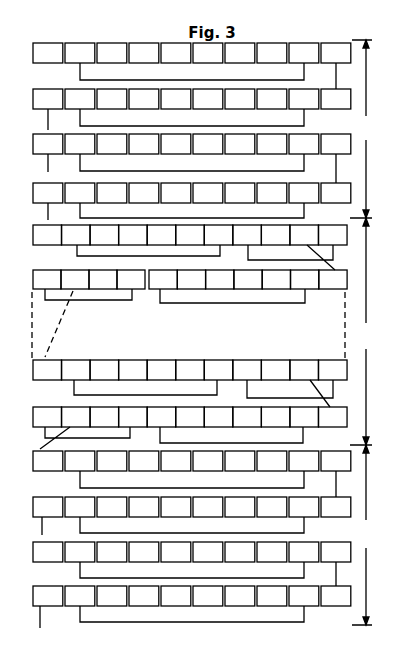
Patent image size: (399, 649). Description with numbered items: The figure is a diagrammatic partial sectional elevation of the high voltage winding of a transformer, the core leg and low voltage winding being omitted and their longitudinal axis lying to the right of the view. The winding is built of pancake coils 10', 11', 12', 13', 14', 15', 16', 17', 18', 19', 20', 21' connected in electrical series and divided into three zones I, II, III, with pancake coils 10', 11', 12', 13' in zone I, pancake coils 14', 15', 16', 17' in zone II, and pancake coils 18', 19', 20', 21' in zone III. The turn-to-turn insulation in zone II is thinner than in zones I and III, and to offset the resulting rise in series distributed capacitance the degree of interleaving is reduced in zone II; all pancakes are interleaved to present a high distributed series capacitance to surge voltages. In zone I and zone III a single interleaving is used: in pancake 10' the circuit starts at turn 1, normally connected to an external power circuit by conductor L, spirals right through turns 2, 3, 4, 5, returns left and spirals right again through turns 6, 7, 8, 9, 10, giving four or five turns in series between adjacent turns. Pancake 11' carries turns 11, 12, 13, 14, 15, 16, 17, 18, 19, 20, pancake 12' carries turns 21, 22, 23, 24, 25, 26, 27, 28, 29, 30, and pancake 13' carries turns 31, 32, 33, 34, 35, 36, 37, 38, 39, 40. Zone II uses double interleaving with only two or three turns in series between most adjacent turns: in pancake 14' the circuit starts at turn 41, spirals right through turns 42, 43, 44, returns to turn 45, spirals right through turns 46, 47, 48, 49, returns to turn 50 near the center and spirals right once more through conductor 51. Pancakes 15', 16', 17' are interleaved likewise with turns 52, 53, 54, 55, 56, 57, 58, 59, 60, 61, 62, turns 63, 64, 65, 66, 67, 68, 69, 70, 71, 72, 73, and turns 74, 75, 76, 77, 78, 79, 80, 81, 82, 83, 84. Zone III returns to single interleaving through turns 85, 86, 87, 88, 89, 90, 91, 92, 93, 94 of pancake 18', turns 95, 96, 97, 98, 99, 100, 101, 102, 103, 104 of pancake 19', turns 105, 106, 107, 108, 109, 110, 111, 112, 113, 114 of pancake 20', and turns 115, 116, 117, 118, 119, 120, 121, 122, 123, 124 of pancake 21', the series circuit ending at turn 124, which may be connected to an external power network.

The conductor L is at (49, 17).
The zone I is at (361, 129).
The zone II is at (361, 331).
The zone III is at (362, 535).
The pancake coil 10' is at (187, 66).
The pancake coil 11' is at (187, 110).
The pancake coil 12' is at (187, 158).
The pancake coil 13' is at (187, 203).
The pancake coil 14' is at (185, 247).
The pancake coil 15' is at (189, 314).
The pancake coil 16' is at (185, 383).
The pancake coil 17' is at (185, 428).
The pancake coil 18' is at (187, 474).
The pancake coil 19' is at (186, 517).
The pancake coil 20' is at (186, 564).
The pancake coil 21' is at (182, 610).
The turn 1 is at (48, 53).
The turn 2 is at (112, 53).
The turn 3 is at (176, 53).
The turn 4 is at (240, 53).
The turn 5 is at (304, 53).
The turn 6 is at (80, 53).
The turn 7 is at (144, 53).
The turn 8 is at (208, 53).
The turn 9 is at (272, 53).
The turn 10 is at (336, 53).
The turn 11 is at (336, 99).
The turn 12 is at (272, 99).
The turn 13 is at (208, 99).
The turn 14 is at (144, 99).
The turn 15 is at (80, 99).
The turn 16 is at (304, 99).
The turn 17 is at (240, 99).
The turn 18 is at (176, 99).
The turn 19 is at (112, 99).
The turn 20 is at (48, 99).
The turn 21 is at (48, 144).
The turn 22 is at (112, 144).
The turn 23 is at (176, 144).
The turn 24 is at (240, 144).
The turn 25 is at (304, 144).
The turn 26 is at (80, 144).
The turn 27 is at (144, 144).
The turn 28 is at (208, 144).
The turn 29 is at (272, 144).
The turn 30 is at (336, 144).
The turn 31 is at (336, 193).
The turn 32 is at (272, 193).
The turn 33 is at (208, 193).
The turn 34 is at (144, 193).
The turn 35 is at (80, 193).
The turn 36 is at (304, 193).
The turn 37 is at (240, 193).
The turn 38 is at (176, 193).
The turn 39 is at (112, 193).
The turn 40 is at (48, 193).
The turn 41 is at (47, 235).
The turn 42 is at (104, 235).
The turn 43 is at (161, 235).
The turn 44 is at (218, 235).
The turn 45 is at (76, 235).
The turn 46 is at (133, 235).
The turn 47 is at (190, 235).
The turn 48 is at (275, 235).
The turn 49 is at (333, 235).
The turn 50 is at (247, 235).
The conductor 51 is at (304, 235).
The turn 52 is at (333, 279).
The turn 53 is at (276, 279).
The turn 54 is at (220, 279).
The turn 55 is at (163, 279).
The turn 56 is at (305, 279).
The turn 57 is at (248, 279).
The turn 58 is at (191, 279).
The turn 59 is at (103, 279).
The turn 60 is at (47, 279).
The turn 61 is at (131, 279).
The turn 62 is at (75, 279).
The turn 63 is at (47, 370).
The turn 64 is at (104, 370).
The turn 65 is at (161, 370).
The turn 66 is at (218, 370).
The turn 67 is at (76, 370).
The turn 68 is at (133, 370).
The turn 69 is at (190, 370).
The turn 70 is at (275, 370).
The turn 71 is at (333, 370).
The turn 72 is at (247, 370).
The turn 73 is at (304, 370).
The turn 74 is at (333, 417).
The turn 75 is at (275, 417).
The turn 76 is at (218, 417).
The turn 77 is at (161, 417).
The turn 78 is at (304, 417).
The turn 79 is at (247, 417).
The turn 80 is at (190, 417).
The turn 81 is at (104, 417).
The turn 82 is at (47, 417).
The turn 83 is at (133, 417).
The turn 84 is at (76, 417).
The turn 85 is at (48, 461).
The turn 86 is at (112, 461).
The turn 87 is at (176, 461).
The turn 88 is at (240, 461).
The turn 89 is at (304, 461).
The turn 90 is at (80, 461).
The turn 91 is at (144, 461).
The turn 92 is at (208, 461).
The turn 93 is at (272, 461).
The turn 94 is at (336, 461).
The turn 95 is at (336, 507).
The turn 96 is at (272, 507).
The turn 97 is at (208, 507).
The turn 98 is at (144, 507).
The turn 99 is at (80, 507).
The turn 100 is at (304, 507).
The turn 101 is at (240, 507).
The turn 102 is at (176, 507).
The turn 103 is at (112, 507).
The turn 104 is at (48, 507).
The turn 105 is at (48, 552).
The turn 106 is at (112, 552).
The turn 107 is at (176, 552).
The turn 108 is at (240, 552).
The turn 109 is at (304, 552).
The turn 110 is at (80, 552).
The turn 111 is at (144, 552).
The turn 112 is at (208, 552).
The turn 113 is at (272, 552).
The turn 114 is at (336, 552).
The turn 115 is at (336, 596).
The turn 116 is at (272, 596).
The turn 117 is at (208, 596).
The turn 118 is at (144, 596).
The turn 119 is at (80, 596).
The turn 120 is at (304, 596).
The turn 121 is at (240, 596).
The turn 122 is at (176, 596).
The turn 123 is at (112, 596).
The turn 124 is at (48, 596).